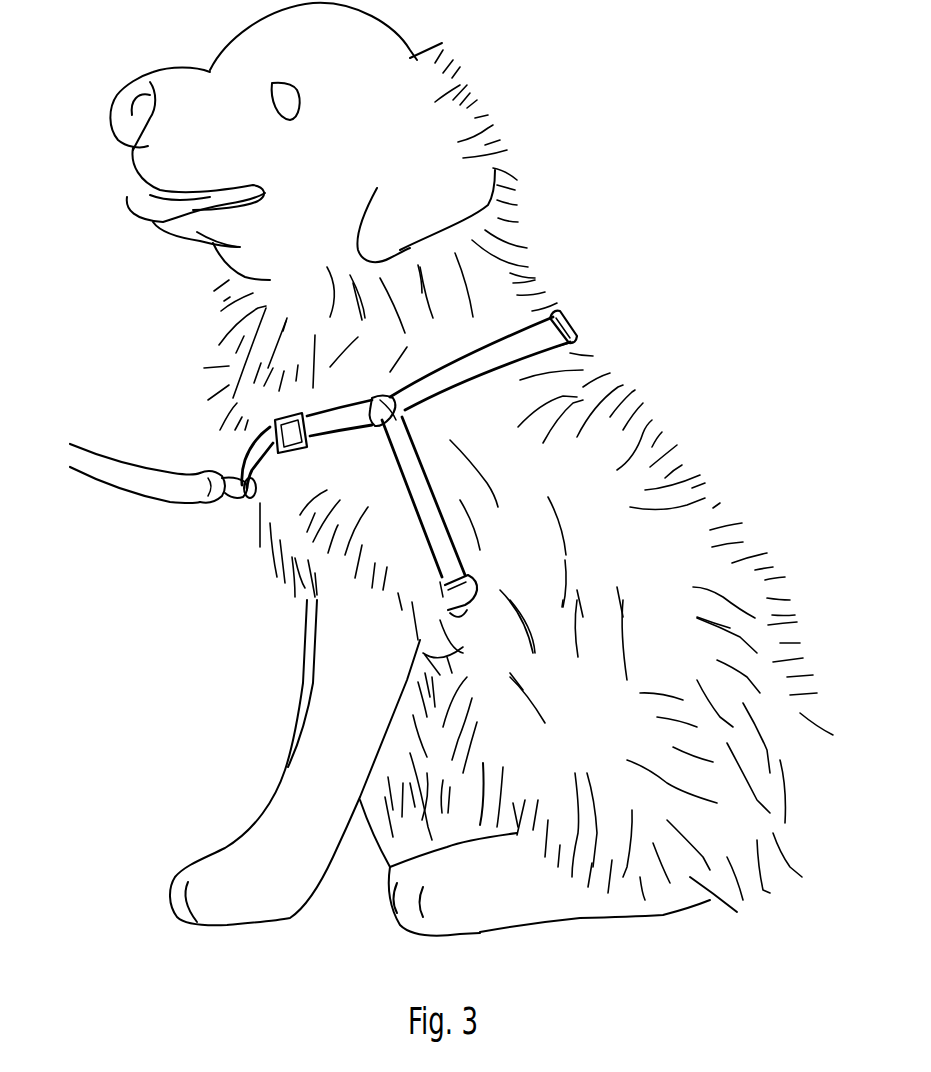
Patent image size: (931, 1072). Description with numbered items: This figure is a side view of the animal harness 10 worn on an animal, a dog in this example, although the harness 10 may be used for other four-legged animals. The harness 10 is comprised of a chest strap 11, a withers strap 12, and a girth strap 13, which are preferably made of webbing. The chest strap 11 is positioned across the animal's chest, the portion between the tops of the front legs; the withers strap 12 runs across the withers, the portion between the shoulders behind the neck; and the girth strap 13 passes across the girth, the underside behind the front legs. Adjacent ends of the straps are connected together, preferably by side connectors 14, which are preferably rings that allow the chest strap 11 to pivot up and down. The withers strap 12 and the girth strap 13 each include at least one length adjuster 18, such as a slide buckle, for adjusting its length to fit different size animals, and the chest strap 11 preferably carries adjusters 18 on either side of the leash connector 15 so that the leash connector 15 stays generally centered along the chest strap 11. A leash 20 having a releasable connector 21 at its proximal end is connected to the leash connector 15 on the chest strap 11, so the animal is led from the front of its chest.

The animal harness 10 is at (462, 343).
The chest strap 11 is at (247, 463).
The withers strap 12 is at (465, 374).
The girth strap 13 is at (417, 508).
The side connector 14 is at (377, 397).
The leash connector 15 is at (240, 505).
The length adjuster 18 is at (555, 313).
The leash 20 is at (118, 480).
The releasable connector 21 is at (220, 505).